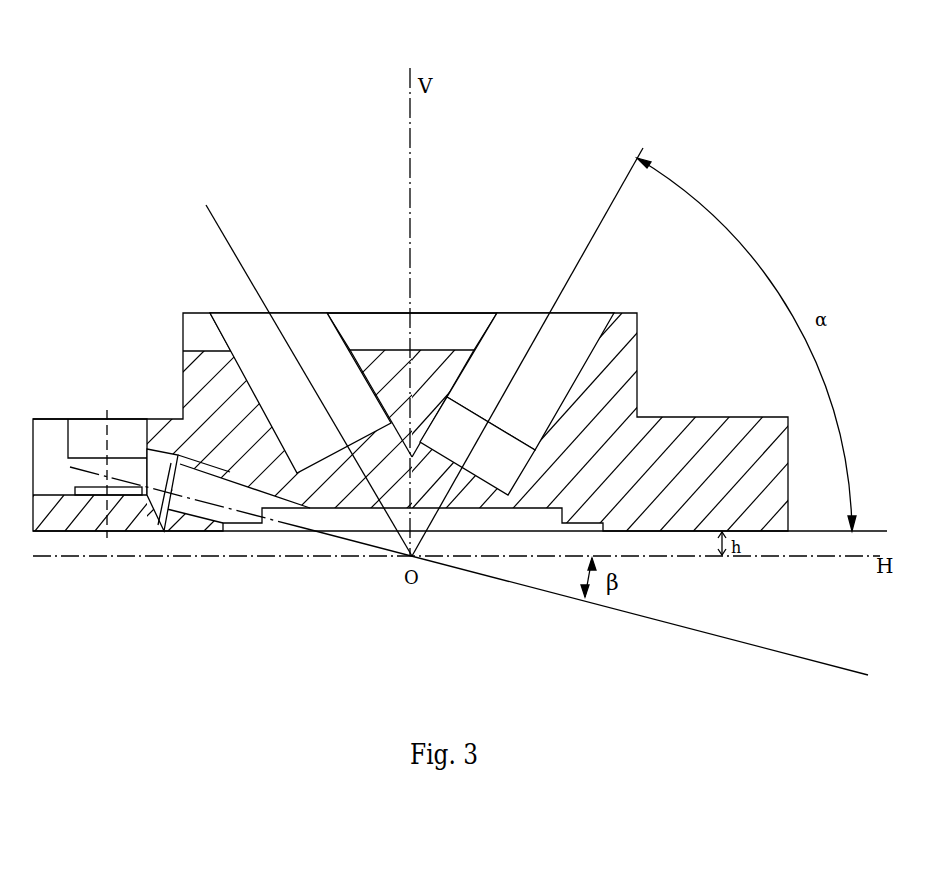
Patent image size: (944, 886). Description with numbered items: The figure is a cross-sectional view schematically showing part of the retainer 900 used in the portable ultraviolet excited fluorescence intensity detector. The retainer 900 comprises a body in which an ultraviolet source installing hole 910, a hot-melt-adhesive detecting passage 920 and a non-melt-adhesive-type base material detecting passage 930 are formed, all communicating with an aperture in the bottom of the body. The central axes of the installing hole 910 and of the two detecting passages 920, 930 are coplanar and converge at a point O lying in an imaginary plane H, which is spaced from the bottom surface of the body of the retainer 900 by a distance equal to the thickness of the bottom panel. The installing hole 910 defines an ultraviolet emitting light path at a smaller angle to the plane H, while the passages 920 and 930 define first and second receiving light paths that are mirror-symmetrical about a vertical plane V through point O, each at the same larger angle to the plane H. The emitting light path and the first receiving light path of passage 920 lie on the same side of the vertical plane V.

The retainer 900 is at (532, 31).
The ultraviolet source installing hole 910 is at (188, 498).
The hot-melt-adhesive detecting passage 920 is at (322, 383).
The non-melt-adhesive-type base material detecting passage 930 is at (492, 383).